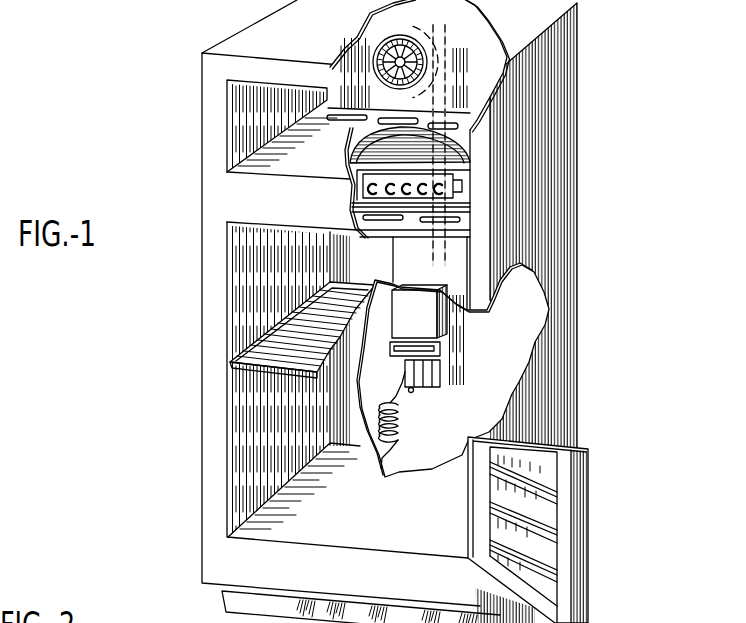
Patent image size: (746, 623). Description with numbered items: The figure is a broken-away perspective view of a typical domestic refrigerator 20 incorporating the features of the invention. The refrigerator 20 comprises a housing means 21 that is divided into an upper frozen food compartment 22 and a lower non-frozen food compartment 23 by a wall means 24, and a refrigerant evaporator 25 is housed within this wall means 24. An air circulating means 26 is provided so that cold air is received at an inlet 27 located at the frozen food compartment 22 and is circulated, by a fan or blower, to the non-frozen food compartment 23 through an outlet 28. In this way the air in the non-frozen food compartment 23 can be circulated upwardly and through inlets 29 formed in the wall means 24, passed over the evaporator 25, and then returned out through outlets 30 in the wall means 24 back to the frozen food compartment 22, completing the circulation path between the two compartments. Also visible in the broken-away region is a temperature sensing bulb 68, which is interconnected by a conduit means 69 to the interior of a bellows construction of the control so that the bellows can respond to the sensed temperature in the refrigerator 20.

The refrigerator 20 is at (600, 86).
The housing means 21 is at (243, 42).
The frozen food compartment 22 is at (250, 127).
The non-frozen food compartment 23 is at (257, 282).
The wall means 24 is at (250, 206).
The refrigerant evaporator 25 is at (455, 188).
The air circulating means 26 is at (428, 328).
The inlet 27 is at (415, 57).
The outlet 28 is at (441, 377).
The inlets 29 is at (380, 214).
The outlets 30 is at (337, 115).
The temperature sensing bulb 68 is at (382, 466).
The conduit means 69 is at (401, 427).